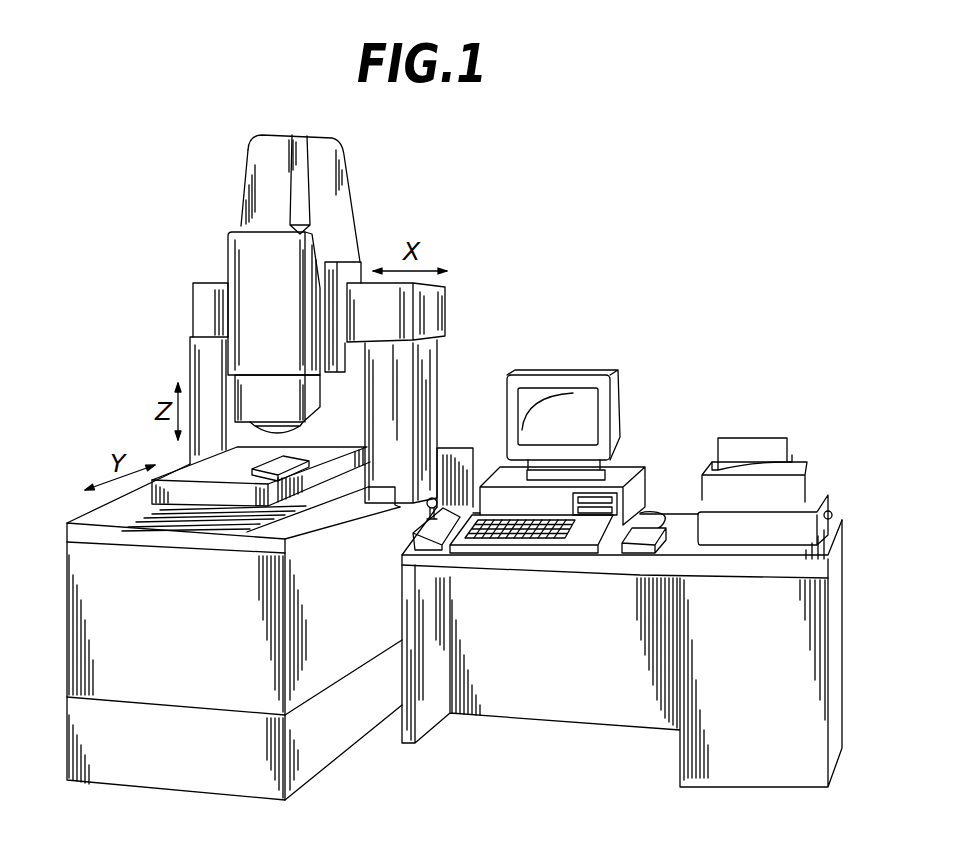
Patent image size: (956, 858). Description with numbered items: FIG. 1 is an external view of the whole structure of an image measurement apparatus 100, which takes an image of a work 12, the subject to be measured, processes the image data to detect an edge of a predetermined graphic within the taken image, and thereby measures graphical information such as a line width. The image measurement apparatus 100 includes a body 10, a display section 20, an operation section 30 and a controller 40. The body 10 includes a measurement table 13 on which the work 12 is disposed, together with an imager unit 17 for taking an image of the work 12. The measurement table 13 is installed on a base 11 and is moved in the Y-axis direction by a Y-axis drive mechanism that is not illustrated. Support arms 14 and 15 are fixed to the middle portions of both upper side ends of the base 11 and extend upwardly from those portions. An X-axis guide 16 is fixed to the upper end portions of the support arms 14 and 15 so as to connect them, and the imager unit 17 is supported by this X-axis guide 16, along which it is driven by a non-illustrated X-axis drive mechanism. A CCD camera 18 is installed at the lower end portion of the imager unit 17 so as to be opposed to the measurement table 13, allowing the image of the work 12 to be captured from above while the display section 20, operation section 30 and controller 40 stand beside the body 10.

The image measurement apparatus 100 is at (607, 232).
The body 10 is at (362, 172).
The base 11 is at (85, 515).
The work 12 is at (285, 463).
The measurement table 13 is at (218, 463).
The support arm 14 is at (190, 358).
The support arm 15 is at (437, 385).
The X-axis guide 16 is at (212, 283).
The imager unit 17 is at (247, 155).
The CCD camera 18 is at (290, 433).
The display section 20 is at (566, 372).
The operation section 30 is at (556, 562).
The controller 40 is at (635, 460).